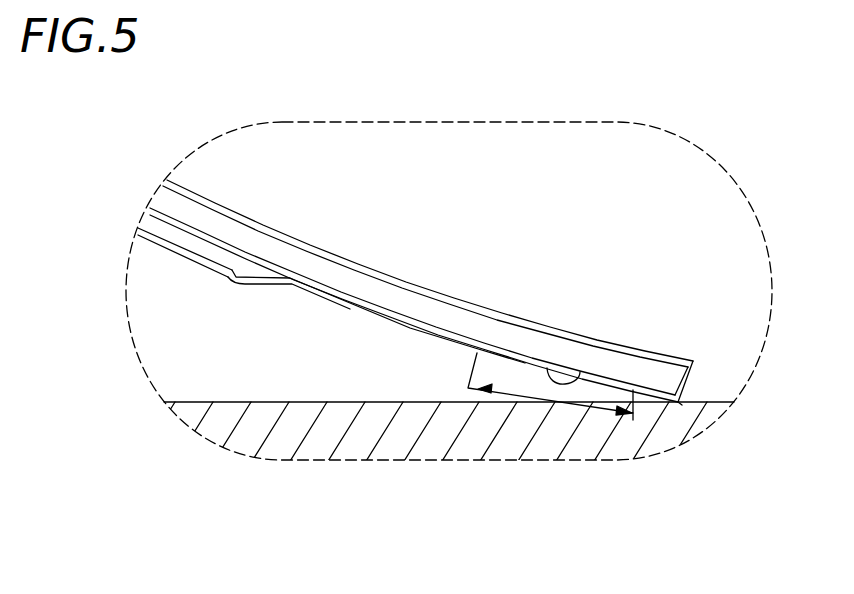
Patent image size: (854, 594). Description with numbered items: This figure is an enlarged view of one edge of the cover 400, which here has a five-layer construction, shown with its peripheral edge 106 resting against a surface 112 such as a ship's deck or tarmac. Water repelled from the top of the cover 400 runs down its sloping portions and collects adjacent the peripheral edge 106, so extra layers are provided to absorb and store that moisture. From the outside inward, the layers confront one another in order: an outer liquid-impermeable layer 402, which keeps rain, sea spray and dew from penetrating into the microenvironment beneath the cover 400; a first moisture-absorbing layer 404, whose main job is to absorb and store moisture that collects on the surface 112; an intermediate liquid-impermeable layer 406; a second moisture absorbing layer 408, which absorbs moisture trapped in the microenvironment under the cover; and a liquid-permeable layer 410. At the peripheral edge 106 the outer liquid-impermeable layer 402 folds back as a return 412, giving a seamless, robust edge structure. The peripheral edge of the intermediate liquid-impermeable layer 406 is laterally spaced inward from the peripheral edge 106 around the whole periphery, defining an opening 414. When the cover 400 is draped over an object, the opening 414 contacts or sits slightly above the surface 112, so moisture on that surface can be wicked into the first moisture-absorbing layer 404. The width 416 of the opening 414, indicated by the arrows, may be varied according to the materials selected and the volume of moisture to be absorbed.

The cover 400 is at (442, 232).
The outer liquid-impermeable layer 402 is at (550, 325).
The first moisture-absorbing layer 404 is at (437, 303).
The intermediate liquid-impermeable layer 406 is at (412, 329).
The second moisture absorbing layer 408 is at (182, 243).
The liquid-permeable layer 410 is at (257, 287).
The return 412 is at (642, 401).
The opening 414 is at (584, 368).
The width 416 is at (528, 398).
The peripheral edge 106 is at (692, 376).
The surface 112 is at (235, 401).